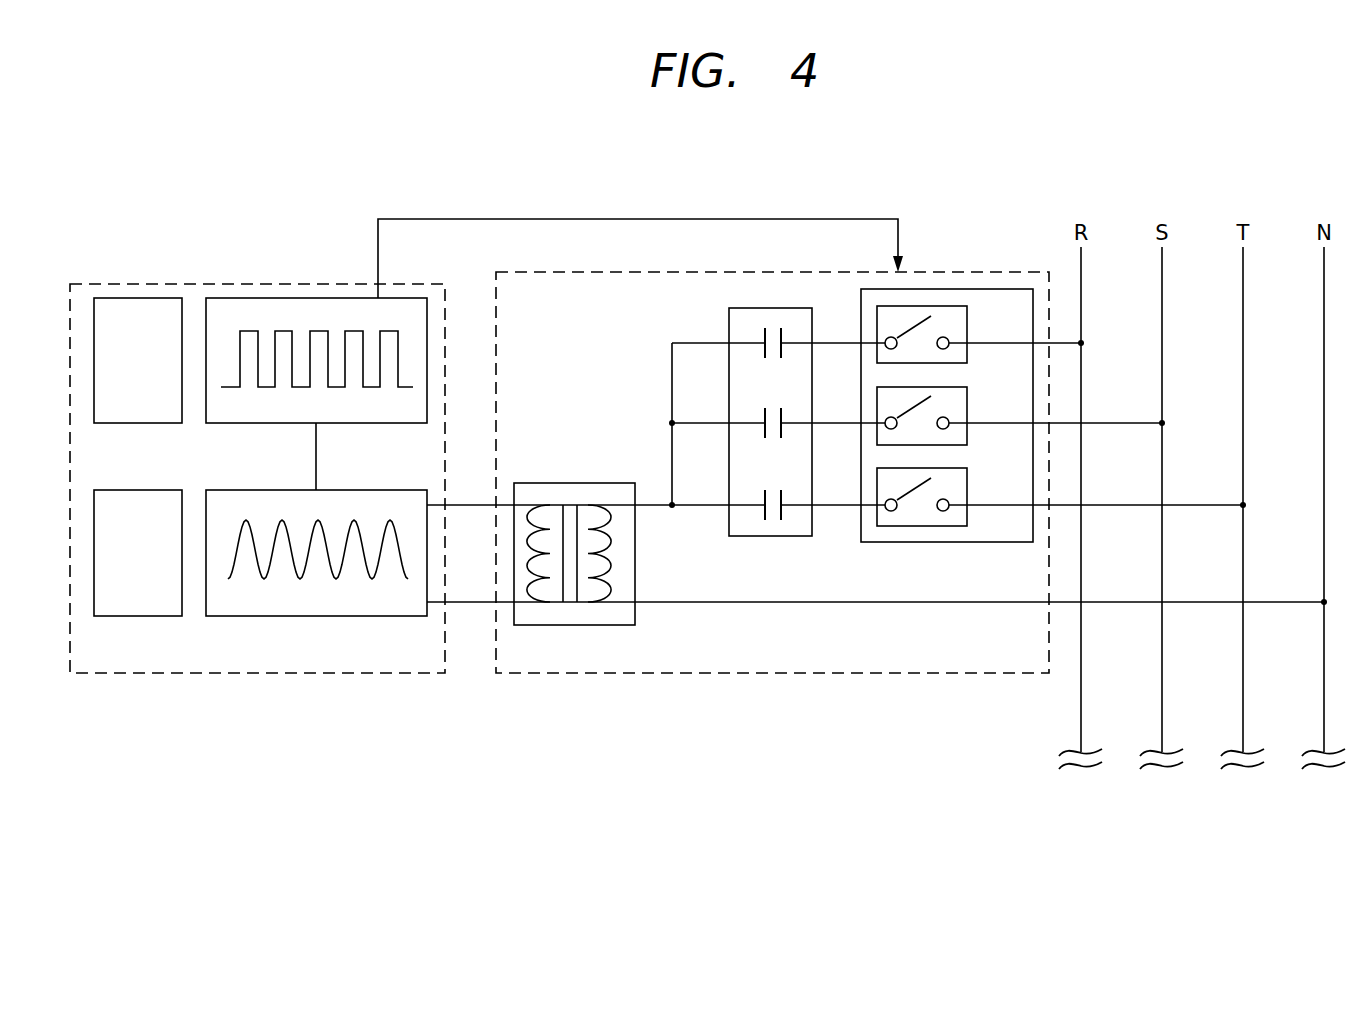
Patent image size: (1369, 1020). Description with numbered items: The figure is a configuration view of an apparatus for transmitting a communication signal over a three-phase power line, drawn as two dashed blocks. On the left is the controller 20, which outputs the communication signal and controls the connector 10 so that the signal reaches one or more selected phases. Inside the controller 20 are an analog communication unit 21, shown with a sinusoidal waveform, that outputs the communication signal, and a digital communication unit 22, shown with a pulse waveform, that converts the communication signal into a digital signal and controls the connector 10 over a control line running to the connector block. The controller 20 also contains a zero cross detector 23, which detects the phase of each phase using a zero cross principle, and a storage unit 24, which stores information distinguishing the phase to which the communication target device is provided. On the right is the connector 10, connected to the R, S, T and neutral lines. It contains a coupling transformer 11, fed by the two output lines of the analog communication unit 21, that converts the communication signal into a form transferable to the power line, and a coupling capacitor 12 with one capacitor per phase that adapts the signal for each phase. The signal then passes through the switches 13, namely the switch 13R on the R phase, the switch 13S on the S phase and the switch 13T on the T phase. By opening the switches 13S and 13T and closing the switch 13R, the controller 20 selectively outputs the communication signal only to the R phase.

The connector 10 is at (725, 673).
The coupling transformer 11 is at (575, 483).
The coupling capacitor 12 is at (771, 536).
The switch 13 is at (918, 542).
The switch connected to the R phase 13R is at (967, 324).
The switch connected to the S phase 13S is at (967, 401).
The switch connected to the T phase 13T is at (967, 484).
The controller 20 is at (257, 673).
The analog communication unit 21 is at (363, 616).
The digital communication unit 22 is at (363, 423).
The zero cross detector 23 is at (138, 423).
The storage unit 24 is at (138, 616).